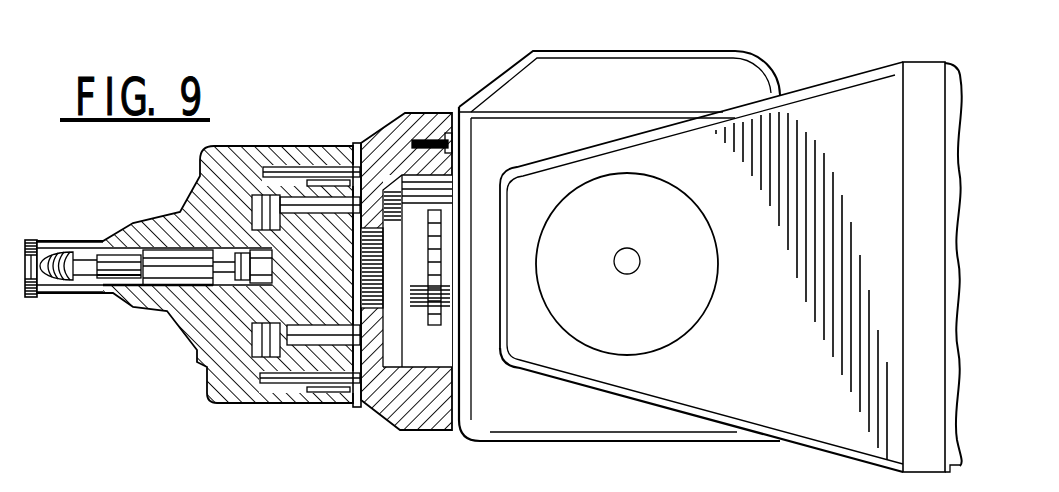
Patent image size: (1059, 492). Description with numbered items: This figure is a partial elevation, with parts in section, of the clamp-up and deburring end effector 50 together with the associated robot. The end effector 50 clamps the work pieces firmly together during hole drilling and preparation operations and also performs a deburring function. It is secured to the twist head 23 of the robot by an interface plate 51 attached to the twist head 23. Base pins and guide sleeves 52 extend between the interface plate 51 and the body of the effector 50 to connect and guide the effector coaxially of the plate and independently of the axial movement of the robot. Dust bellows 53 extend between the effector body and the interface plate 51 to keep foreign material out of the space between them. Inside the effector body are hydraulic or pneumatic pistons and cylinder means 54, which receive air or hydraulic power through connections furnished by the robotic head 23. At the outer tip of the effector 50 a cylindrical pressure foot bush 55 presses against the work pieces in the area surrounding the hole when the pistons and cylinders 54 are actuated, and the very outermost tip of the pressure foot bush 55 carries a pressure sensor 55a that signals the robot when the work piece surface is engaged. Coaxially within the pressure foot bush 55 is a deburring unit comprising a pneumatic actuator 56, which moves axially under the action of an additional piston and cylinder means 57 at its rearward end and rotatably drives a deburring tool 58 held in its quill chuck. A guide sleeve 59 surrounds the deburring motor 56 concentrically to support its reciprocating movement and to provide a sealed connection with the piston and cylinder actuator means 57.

The twist head 23 is at (591, 44).
The clamp-up and deburring end effector 50 is at (279, 131).
The interface plate 51 is at (403, 113).
The base pins and guide sleeves 52 is at (314, 169).
The dust bellows 53 is at (354, 408).
The hydraulic or pneumatic pistons and cylinder means 54 is at (302, 348).
The cylindrical pressure foot bush 55 is at (65, 242).
The pressure sensor 55a is at (21, 298).
The pneumatic actuator 56 is at (129, 300).
The piston and cylinder means 57 is at (228, 277).
The deburring tool 58 is at (96, 291).
The guide sleeve 59 is at (178, 269).